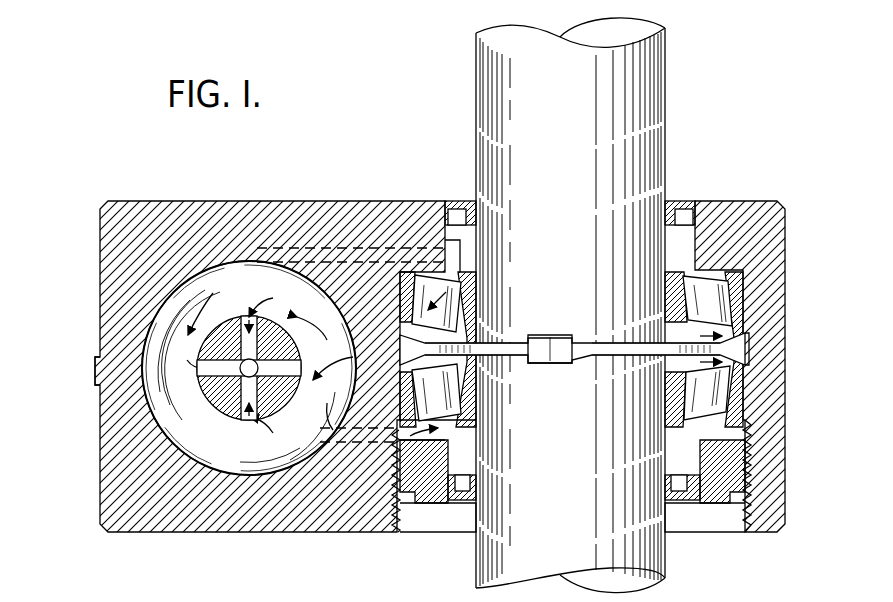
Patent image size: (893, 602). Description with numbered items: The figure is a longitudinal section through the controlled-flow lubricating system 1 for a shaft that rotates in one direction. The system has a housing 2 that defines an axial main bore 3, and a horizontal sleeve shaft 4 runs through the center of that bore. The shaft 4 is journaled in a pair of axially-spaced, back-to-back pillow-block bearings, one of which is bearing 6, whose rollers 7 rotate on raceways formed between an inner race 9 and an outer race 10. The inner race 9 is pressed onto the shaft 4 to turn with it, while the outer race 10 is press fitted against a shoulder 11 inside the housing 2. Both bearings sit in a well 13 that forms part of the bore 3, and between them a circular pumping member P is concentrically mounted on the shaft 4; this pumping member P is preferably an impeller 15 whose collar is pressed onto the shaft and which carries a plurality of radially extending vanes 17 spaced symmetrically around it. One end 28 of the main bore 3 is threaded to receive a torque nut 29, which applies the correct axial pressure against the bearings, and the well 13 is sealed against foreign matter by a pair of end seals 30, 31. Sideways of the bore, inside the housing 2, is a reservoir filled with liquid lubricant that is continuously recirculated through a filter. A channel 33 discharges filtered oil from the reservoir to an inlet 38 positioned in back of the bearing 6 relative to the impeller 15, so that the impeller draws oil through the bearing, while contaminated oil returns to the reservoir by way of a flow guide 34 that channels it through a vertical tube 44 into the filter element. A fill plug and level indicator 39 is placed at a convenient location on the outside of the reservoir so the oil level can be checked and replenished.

The controlled-flow lubricating system 1 is at (702, 152).
The housing 2 is at (226, 199).
The axial main bore 3 is at (750, 300).
The sleeve shaft 4 is at (497, 74).
The bearing 6 is at (478, 328).
The rollers 7 is at (697, 288).
The inner race 9 is at (478, 306).
The outer race 10 is at (746, 412).
The shoulder 11 is at (752, 280).
The well 13 is at (400, 322).
The impeller 15 is at (597, 353).
The vanes 17 is at (750, 350).
The threaded end of main bore 28 is at (752, 457).
The torque nut 29 is at (430, 504).
The end seal 30 is at (478, 488).
The end seal 31 is at (470, 216).
The channel 33 is at (249, 368).
The flow guide 34 is at (228, 396).
The inlet 38 is at (398, 441).
The fill plug and level indicator 39 is at (96, 372).
The vertical tube 44 is at (256, 360).
The pumping member P is at (556, 334).